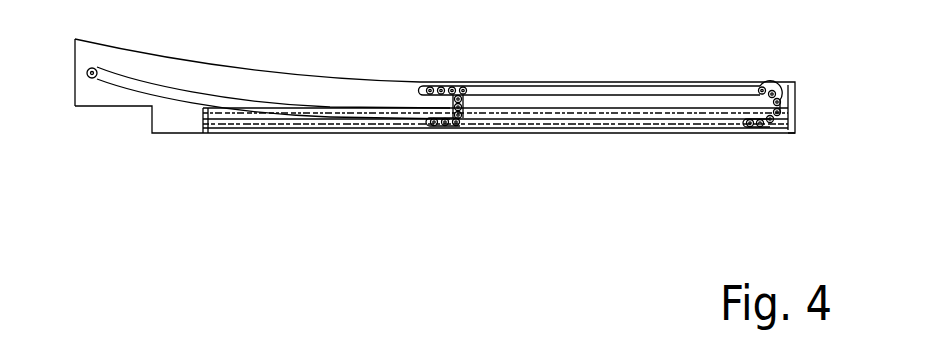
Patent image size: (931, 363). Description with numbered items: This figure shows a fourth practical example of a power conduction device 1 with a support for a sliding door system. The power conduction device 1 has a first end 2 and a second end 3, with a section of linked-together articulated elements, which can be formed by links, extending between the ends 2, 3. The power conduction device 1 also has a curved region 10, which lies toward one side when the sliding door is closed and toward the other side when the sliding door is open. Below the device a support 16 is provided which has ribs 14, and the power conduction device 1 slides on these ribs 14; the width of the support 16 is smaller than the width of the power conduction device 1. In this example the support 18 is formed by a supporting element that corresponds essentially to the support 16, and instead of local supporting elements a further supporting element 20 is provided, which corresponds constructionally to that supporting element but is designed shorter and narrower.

The power conduction device 1 is at (540, 90).
The first end 2 is at (423, 84).
The second end 3 is at (89, 78).
The curved region 10 is at (461, 120).
The ribs 14 is at (640, 115).
The support 16 is at (210, 123).
The support 18 is at (531, 172).
The supporting element 20 is at (783, 82).